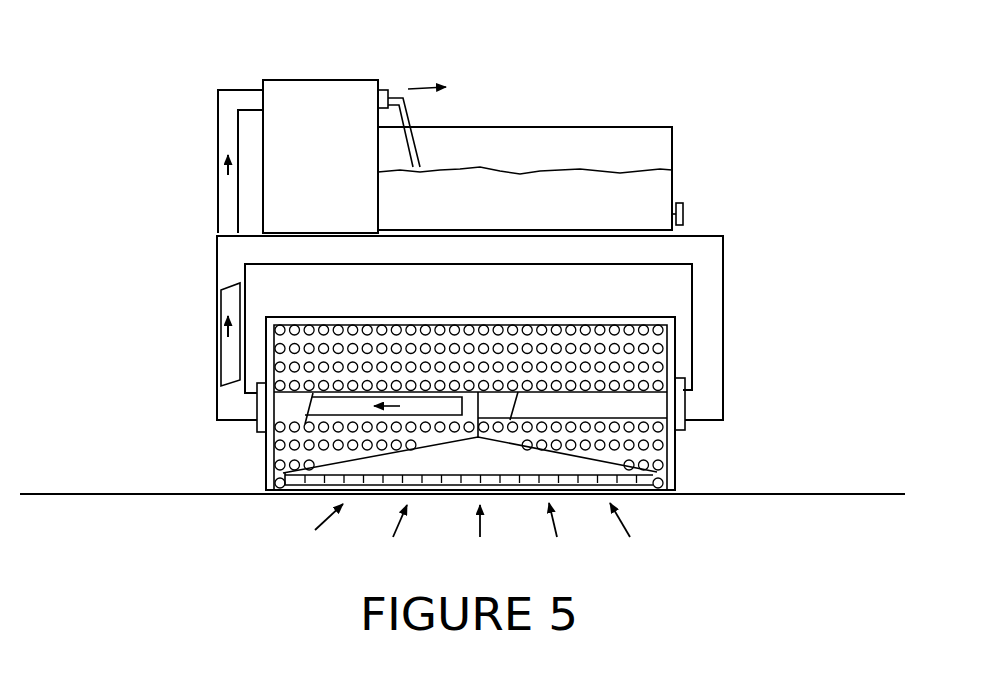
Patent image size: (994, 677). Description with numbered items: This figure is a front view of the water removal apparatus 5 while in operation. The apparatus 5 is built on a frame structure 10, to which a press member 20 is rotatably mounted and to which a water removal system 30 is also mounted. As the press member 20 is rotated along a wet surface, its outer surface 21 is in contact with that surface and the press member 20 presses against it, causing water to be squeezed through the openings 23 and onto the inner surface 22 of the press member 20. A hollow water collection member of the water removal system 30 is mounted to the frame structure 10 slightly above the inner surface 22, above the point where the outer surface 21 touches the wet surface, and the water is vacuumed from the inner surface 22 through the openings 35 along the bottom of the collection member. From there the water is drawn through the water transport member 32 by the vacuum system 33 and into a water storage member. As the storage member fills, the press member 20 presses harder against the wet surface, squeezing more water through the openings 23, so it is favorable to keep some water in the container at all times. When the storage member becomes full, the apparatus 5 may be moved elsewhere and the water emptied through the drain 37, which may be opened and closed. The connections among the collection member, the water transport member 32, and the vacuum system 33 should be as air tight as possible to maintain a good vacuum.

The water removal apparatus 5 is at (712, 53).
The frame structure 10 is at (745, 303).
The press member 20 is at (690, 462).
The outer surface 21 is at (293, 498).
The inner surface 22 is at (290, 320).
The openings 23 is at (272, 446).
The water removal system 30 is at (712, 140).
The water transport member 32 is at (214, 190).
The vacuum system 33 is at (307, 76).
The openings 35 is at (643, 493).
The drain 37 is at (690, 208).